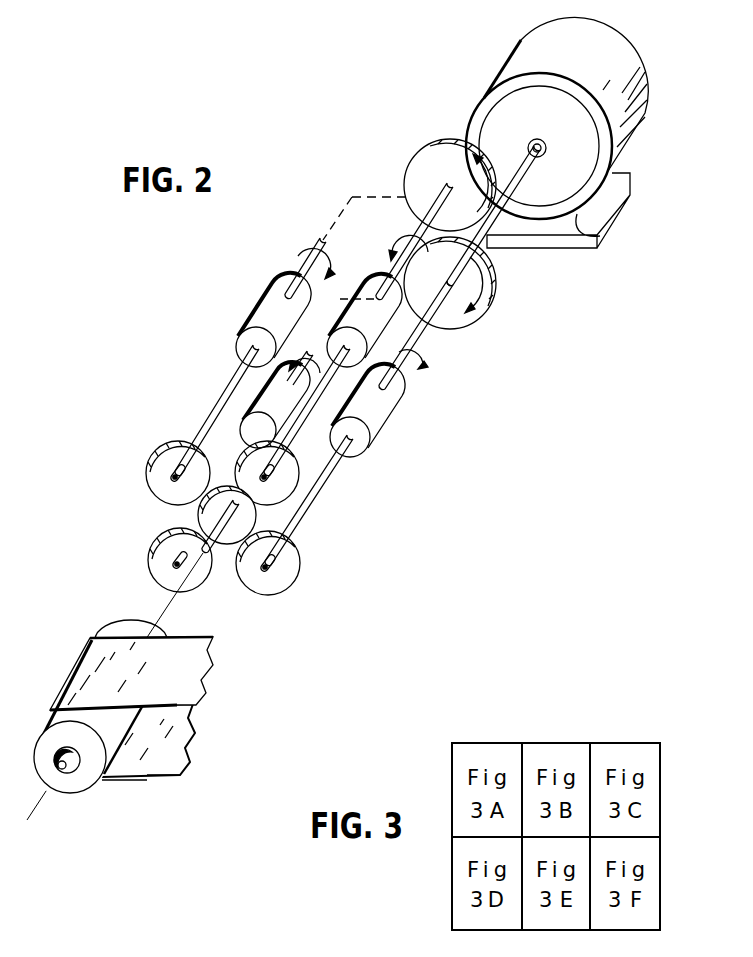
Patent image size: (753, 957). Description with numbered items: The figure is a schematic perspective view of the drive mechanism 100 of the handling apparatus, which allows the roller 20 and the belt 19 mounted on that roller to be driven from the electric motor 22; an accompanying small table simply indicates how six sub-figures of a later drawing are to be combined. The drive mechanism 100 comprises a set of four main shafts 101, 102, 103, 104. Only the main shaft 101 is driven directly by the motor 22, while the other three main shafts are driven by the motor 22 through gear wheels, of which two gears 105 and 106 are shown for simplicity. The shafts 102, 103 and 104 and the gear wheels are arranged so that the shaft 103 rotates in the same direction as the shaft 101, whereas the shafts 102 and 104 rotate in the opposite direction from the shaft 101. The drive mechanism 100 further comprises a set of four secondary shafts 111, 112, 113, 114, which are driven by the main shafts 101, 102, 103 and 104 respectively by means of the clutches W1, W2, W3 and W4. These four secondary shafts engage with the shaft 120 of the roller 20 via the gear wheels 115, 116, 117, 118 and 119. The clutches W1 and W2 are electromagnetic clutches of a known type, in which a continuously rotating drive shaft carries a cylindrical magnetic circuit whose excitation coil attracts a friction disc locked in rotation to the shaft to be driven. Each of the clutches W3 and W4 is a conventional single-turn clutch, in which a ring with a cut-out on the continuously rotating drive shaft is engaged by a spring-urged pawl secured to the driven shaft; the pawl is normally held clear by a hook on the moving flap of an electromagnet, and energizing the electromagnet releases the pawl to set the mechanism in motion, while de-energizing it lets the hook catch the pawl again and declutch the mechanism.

The electric motor 22 is at (527, 58).
The drive mechanism 100 is at (380, 108).
The main shaft 101 is at (420, 328).
The main shaft 102 is at (431, 216).
The main shaft 103 is at (300, 276).
The main shaft 104 is at (258, 372).
The gear wheel 105 is at (498, 282).
The gear wheel 106 is at (404, 180).
The secondary shaft 111 is at (323, 474).
The secondary shaft 112 is at (335, 450).
The secondary shaft 113 is at (222, 412).
The secondary shaft 114 is at (250, 437).
The gear wheel 115 is at (298, 568).
The gear wheel 116 is at (292, 478).
The gear wheel 117 is at (158, 480).
The gear wheel 118 is at (165, 580).
The gear wheel 119 is at (212, 517).
The shaft of roller 120 is at (226, 553).
The electromagnetic clutch W1 is at (396, 412).
The electromagnetic clutch W2 is at (390, 275).
The single-turn clutch W3 is at (256, 318).
The single-turn clutch W4 is at (278, 405).
The belt 19 is at (180, 664).
The roller 20 is at (120, 632).